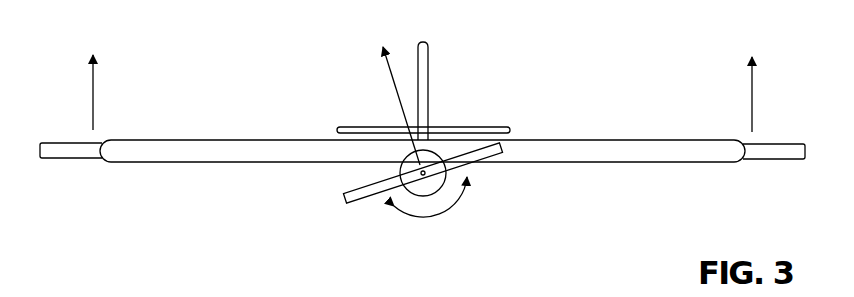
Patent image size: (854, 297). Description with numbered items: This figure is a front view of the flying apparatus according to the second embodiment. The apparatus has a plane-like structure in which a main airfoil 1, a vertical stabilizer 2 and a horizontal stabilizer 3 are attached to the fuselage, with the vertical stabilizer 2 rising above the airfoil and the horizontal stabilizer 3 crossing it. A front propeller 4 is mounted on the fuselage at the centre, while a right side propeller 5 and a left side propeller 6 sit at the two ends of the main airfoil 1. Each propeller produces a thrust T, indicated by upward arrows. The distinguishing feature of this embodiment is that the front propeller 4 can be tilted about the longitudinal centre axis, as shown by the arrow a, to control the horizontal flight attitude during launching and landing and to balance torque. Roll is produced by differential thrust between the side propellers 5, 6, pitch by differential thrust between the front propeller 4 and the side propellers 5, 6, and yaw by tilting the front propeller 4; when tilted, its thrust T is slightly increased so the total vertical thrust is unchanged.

The main airfoil 1 is at (612, 150).
The vertical stabilizer 2 is at (427, 73).
The horizontal stabilizer 3 is at (457, 127).
The front propeller 4 is at (470, 158).
The right side propeller 5 is at (770, 155).
The left side propeller 6 is at (68, 152).
The tilting arrow a is at (440, 215).
The thrust T is at (93, 97).